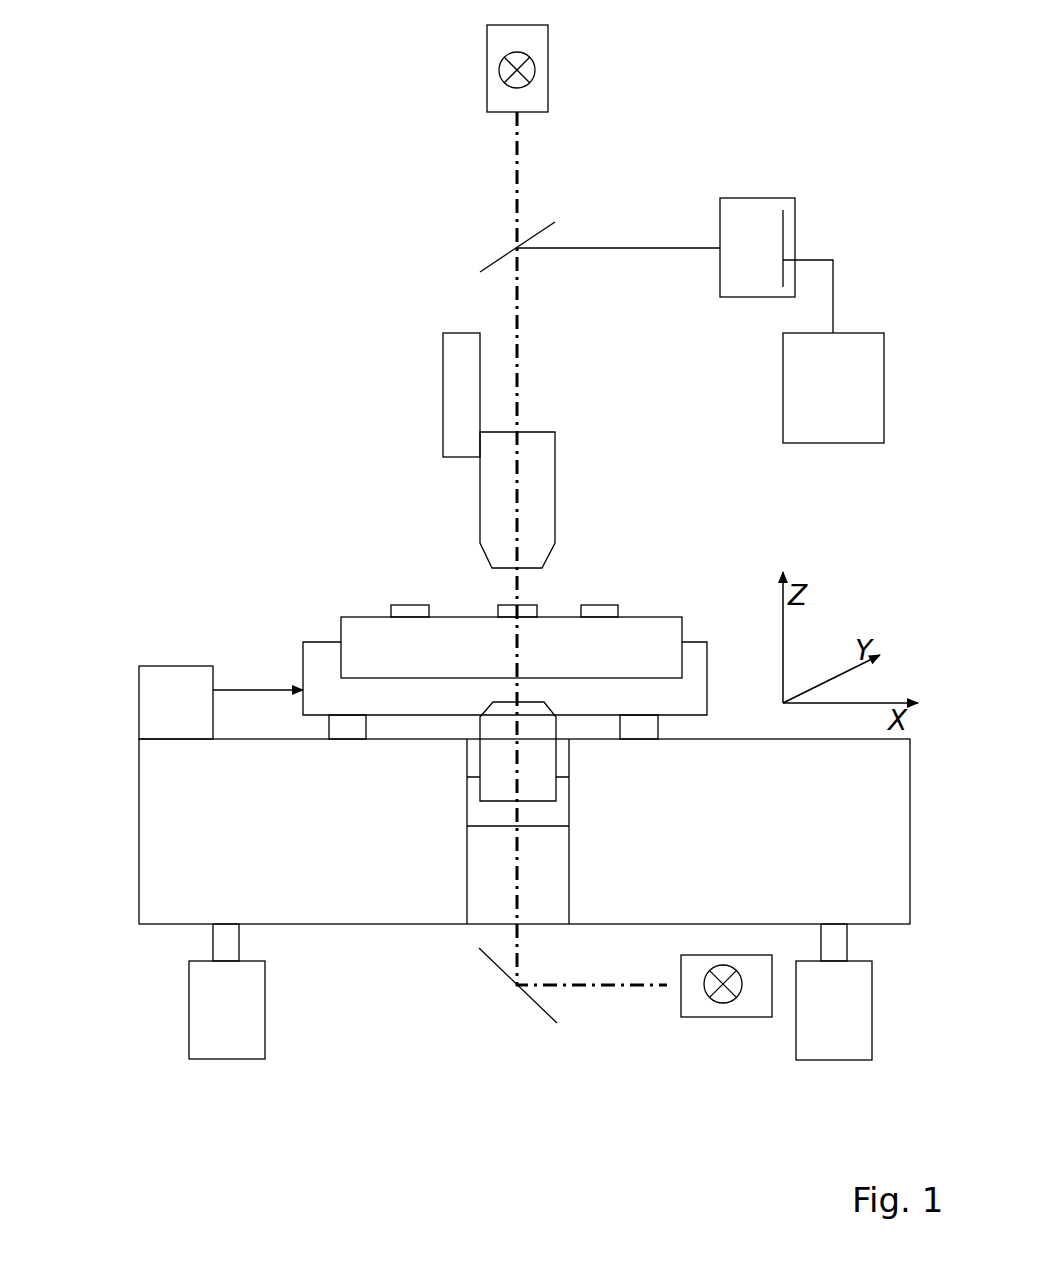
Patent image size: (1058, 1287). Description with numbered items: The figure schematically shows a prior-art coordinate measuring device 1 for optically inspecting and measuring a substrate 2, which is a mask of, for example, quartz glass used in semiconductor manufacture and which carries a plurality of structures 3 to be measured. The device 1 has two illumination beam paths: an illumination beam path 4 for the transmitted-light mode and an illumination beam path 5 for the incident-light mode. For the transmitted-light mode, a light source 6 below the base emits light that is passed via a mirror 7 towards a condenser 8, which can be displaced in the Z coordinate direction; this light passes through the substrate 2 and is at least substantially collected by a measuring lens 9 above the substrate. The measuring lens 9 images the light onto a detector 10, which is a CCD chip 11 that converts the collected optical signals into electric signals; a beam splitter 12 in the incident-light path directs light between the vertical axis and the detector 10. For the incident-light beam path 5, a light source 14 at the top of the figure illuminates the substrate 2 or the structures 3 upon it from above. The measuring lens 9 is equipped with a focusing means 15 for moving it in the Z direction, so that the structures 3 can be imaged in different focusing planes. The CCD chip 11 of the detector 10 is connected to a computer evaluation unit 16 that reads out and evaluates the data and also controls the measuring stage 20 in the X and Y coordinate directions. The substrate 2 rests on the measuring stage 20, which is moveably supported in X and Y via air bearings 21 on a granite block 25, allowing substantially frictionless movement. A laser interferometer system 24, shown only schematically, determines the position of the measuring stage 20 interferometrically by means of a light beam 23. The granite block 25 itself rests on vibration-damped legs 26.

The coordinate measuring device 1 is at (310, 517).
The substrate 2 is at (367, 630).
The structures 3 is at (603, 605).
The illumination beam path 4 is at (520, 765).
The illumination beam path 5 is at (517, 392).
The light source 6 is at (705, 1017).
The mirror 7 is at (540, 1012).
The condenser 8 is at (493, 763).
The measuring lens 9 is at (493, 492).
The detector 10 is at (745, 297).
The CCD chip 11 is at (783, 236).
The beam splitter 12 is at (500, 257).
The light source 14 is at (483, 57).
The focusing means 15 is at (455, 382).
The computer evaluation unit 16 is at (795, 395).
The measuring stage 20 is at (693, 690).
The air bearings 21 is at (352, 728).
The light beam 23 is at (268, 688).
The laser interferometer system 24 is at (165, 690).
The granite block 25 is at (163, 850).
The vibration-damped legs 26 is at (202, 1023).